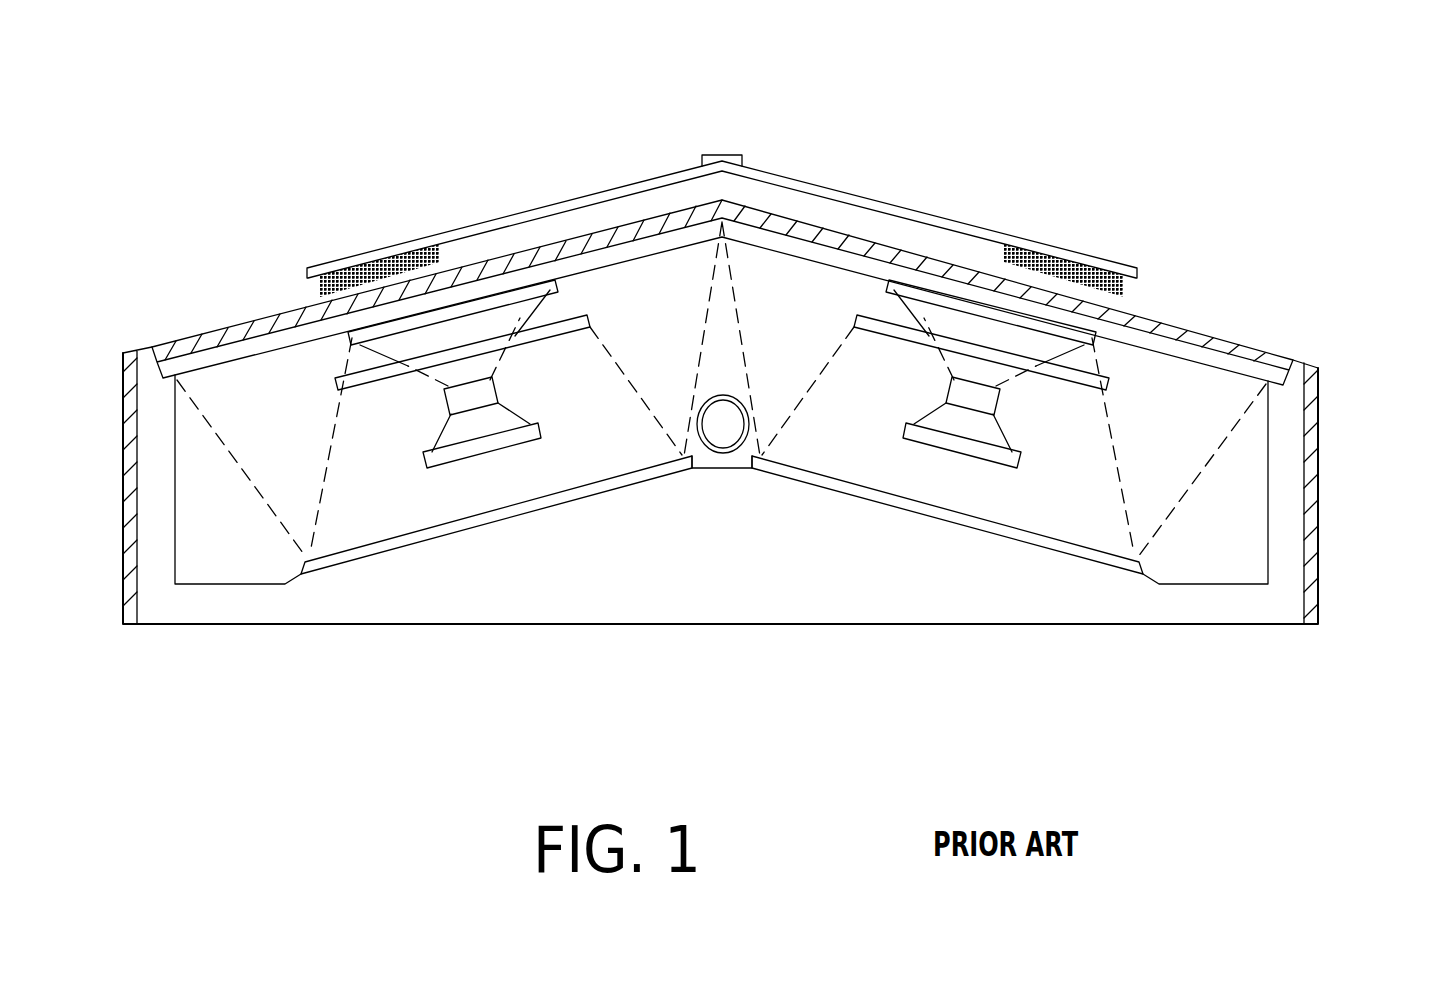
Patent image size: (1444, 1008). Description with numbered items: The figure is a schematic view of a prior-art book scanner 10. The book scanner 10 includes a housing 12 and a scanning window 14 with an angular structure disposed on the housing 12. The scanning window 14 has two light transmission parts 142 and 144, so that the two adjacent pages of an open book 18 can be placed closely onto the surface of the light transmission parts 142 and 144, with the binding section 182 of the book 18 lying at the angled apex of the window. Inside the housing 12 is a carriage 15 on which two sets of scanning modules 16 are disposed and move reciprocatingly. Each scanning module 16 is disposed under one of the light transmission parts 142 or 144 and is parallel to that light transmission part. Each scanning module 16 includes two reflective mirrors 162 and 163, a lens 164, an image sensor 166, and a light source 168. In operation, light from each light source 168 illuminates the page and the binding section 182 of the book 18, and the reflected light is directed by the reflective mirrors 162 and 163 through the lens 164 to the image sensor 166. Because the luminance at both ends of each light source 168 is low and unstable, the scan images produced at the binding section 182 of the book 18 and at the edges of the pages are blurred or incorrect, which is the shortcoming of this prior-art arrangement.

The book scanner 10 is at (1283, 322).
The housing 12 is at (1311, 478).
The scanning window 14 is at (170, 272).
The light transmission part 142 is at (1193, 333).
The light transmission part 144 is at (258, 305).
The carriage 15 is at (1272, 552).
The scanning module 16 is at (950, 540).
The reflective mirror 162 is at (530, 280).
The reflective mirror 163 is at (545, 505).
The lens 164 is at (467, 385).
The image sensor 166 is at (480, 448).
The light source 168 is at (495, 345).
The book 18 is at (930, 222).
The binding section 182 is at (722, 172).